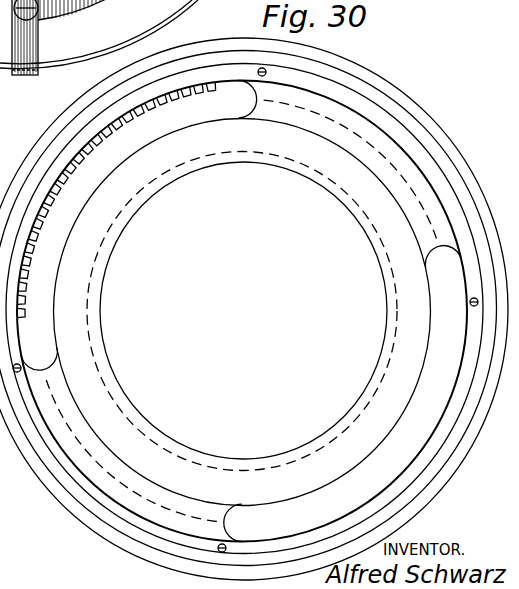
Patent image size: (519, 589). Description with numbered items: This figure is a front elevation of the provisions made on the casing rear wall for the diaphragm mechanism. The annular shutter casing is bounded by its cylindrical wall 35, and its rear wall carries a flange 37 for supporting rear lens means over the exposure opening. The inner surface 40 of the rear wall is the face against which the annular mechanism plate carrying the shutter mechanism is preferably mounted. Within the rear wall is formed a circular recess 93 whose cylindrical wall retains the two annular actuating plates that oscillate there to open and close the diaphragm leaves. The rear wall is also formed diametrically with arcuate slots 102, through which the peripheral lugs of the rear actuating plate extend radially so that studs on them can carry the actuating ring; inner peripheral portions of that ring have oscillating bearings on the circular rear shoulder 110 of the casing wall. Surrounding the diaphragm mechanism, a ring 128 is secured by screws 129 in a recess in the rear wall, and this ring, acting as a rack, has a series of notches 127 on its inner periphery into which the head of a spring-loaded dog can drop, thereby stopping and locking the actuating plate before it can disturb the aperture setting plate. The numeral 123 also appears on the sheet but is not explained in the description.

The cylindrical wall 35 is at (408, 103).
The ring 128 is at (232, 72).
The inner surface 40 is at (407, 161).
The notches 127 is at (174, 85).
The circular recess 93 is at (332, 143).
The flange 37 is at (210, 165).
The circular rear shoulder 110 is at (403, 180).
The arcuate slots 102 is at (203, 107).
The screws 129 is at (266, 70).
The support bar 123 is at (38, 48).